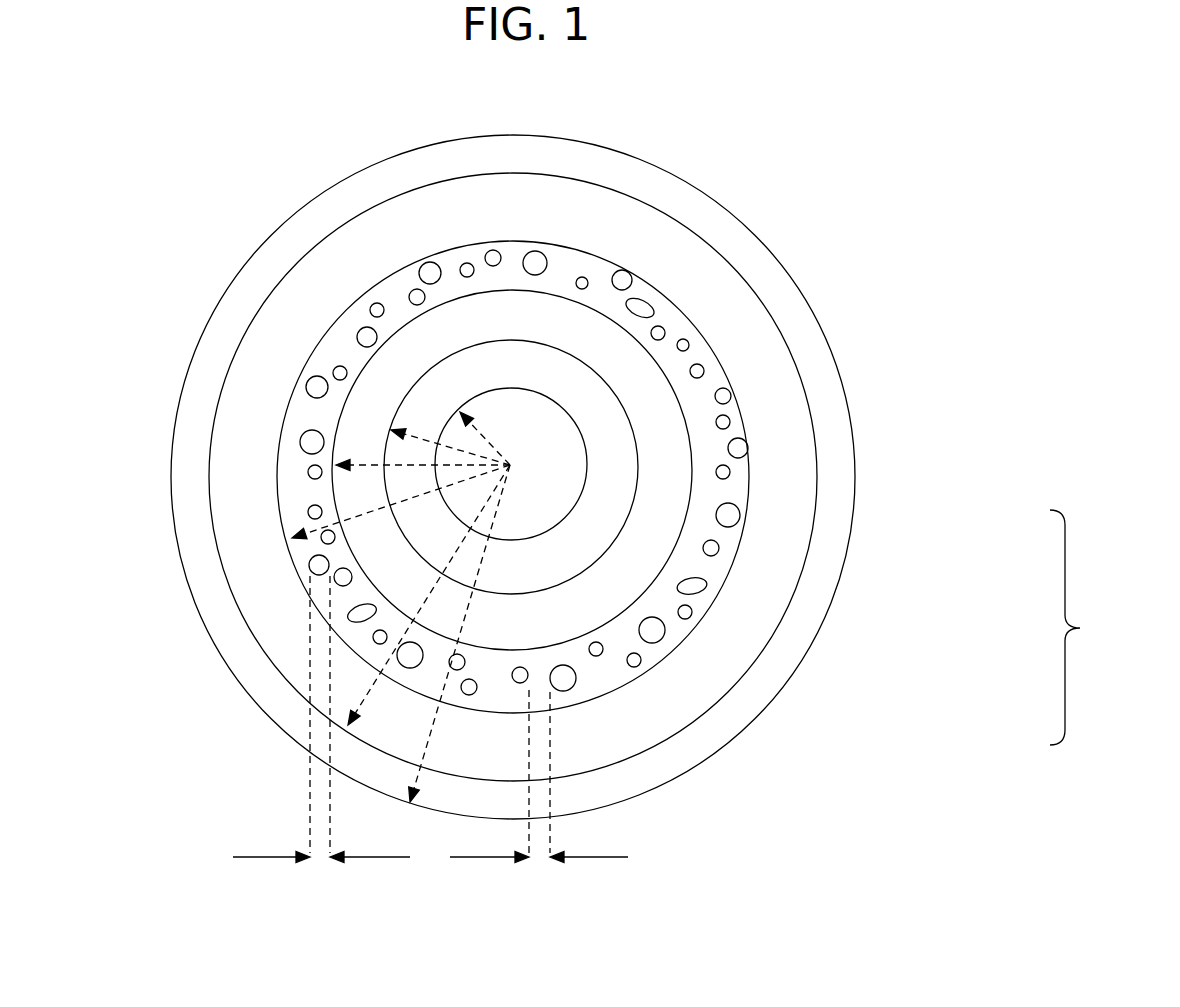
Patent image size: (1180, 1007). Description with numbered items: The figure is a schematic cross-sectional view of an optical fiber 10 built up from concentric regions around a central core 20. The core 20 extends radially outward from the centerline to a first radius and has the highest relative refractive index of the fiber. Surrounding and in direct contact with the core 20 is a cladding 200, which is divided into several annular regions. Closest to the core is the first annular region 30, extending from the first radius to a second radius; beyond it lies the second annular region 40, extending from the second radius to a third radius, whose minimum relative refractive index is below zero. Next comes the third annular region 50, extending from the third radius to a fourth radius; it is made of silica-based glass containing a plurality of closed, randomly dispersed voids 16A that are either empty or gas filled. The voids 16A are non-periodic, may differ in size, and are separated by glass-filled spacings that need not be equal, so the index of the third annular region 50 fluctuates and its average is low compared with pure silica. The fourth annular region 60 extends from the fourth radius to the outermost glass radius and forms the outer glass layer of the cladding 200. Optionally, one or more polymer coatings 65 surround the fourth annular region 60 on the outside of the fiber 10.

The optical fiber 10 is at (728, 149).
The voids 16A is at (754, 437).
The core 20 is at (540, 490).
The first annular region 30 is at (550, 553).
The second annular region 40 is at (566, 617).
The third annular region 50 is at (616, 665).
The fourth annular region 60 is at (603, 730).
The polymer coatings 65 is at (641, 785).
The cladding 200 is at (1105, 627).